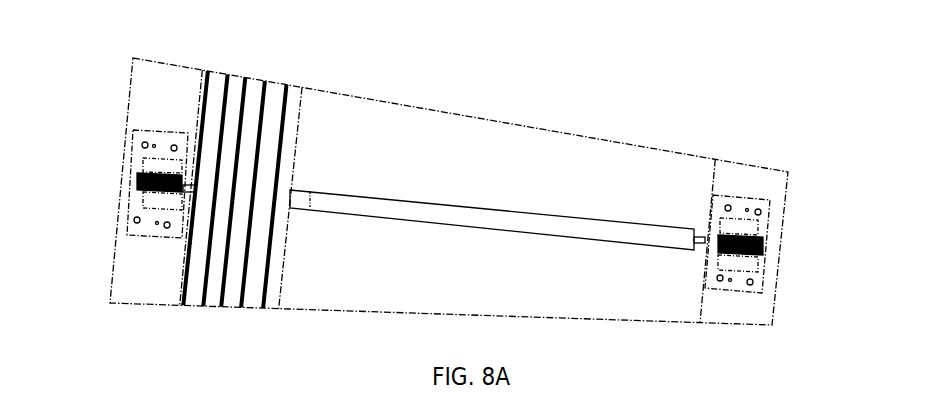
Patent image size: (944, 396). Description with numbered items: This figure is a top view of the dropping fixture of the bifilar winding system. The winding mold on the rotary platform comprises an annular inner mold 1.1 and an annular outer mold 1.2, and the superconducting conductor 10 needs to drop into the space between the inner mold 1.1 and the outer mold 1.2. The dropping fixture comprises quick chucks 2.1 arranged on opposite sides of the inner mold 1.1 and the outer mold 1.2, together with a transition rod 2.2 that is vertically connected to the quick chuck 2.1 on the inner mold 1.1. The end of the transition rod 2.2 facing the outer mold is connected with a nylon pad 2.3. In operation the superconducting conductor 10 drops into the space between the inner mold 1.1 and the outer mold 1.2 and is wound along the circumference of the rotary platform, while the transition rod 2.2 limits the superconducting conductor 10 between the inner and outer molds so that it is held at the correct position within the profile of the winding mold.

The annular inner mold 1.1 is at (765, 185).
The annular outer mold 1.2 is at (152, 105).
The superconducting conductor 10 is at (288, 107).
The quick chuck 2.1 is at (775, 272).
The transition rod 2.2 is at (442, 215).
The nylon pad 2.3 is at (297, 200).